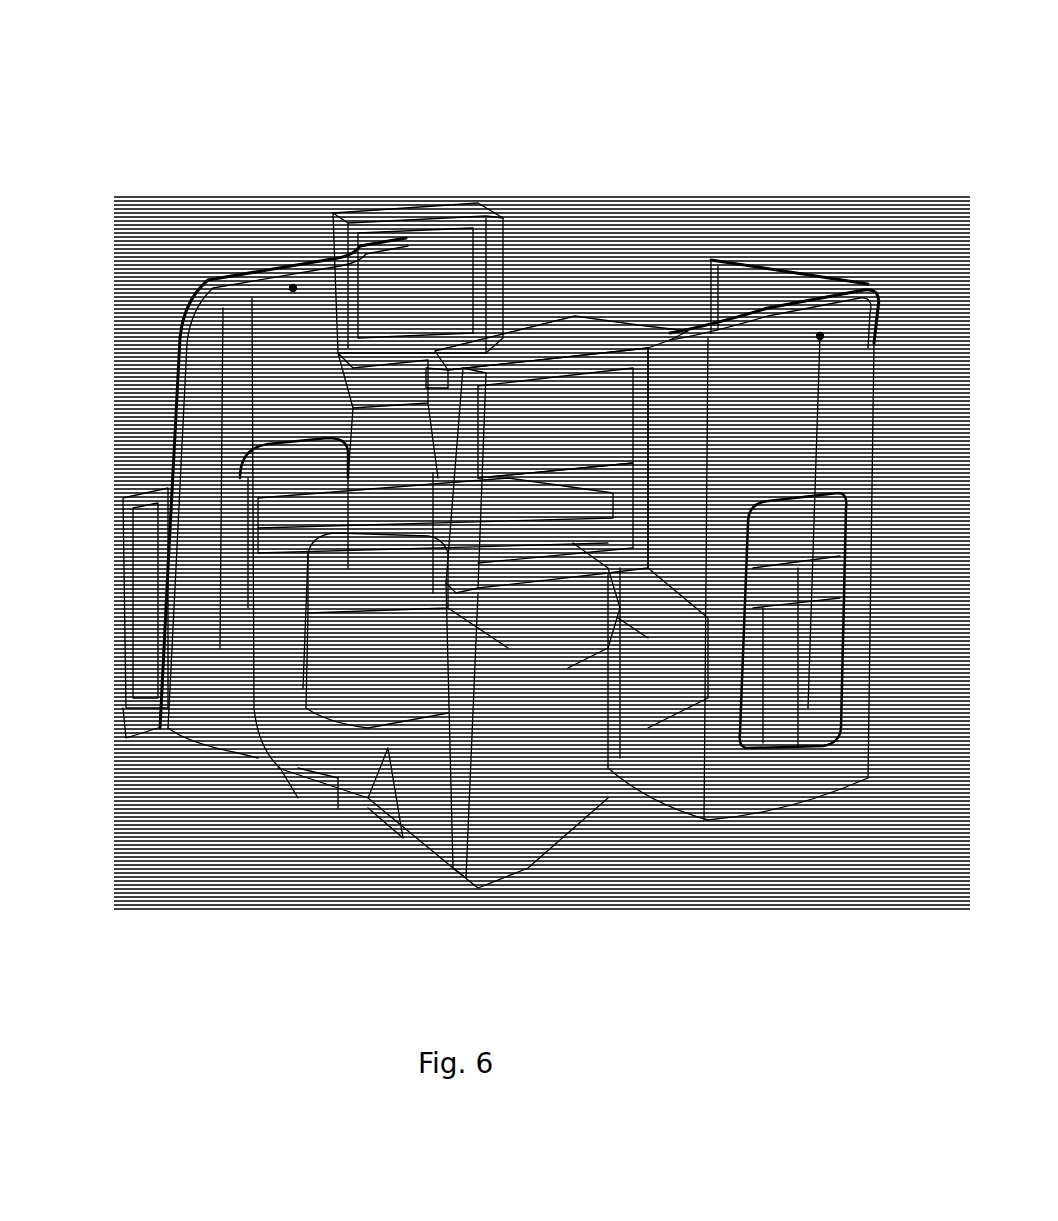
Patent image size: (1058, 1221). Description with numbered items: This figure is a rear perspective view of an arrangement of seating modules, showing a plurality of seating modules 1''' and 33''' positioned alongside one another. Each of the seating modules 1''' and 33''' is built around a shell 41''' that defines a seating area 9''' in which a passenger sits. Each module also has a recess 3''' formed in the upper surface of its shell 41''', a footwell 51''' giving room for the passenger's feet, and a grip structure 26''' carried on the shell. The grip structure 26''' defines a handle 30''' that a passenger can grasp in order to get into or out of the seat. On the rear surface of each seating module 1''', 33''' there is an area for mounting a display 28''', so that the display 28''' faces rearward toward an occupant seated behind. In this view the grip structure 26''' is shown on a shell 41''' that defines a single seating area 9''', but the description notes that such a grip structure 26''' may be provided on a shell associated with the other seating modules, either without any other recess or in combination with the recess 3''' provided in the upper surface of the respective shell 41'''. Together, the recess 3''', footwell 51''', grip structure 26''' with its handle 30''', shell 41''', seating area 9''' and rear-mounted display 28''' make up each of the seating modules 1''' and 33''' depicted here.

The seating area 9''' is at (465, 381).
The footwell 51''' is at (480, 539).
The recess 3''' is at (394, 513).
The handle 30''' is at (564, 504).
The grip structure 26''' is at (462, 534).
The display 28''' is at (565, 403).
The seating module 1''' is at (465, 232).
The seating module 33''' is at (793, 184).
The shell 41''' is at (512, 729).